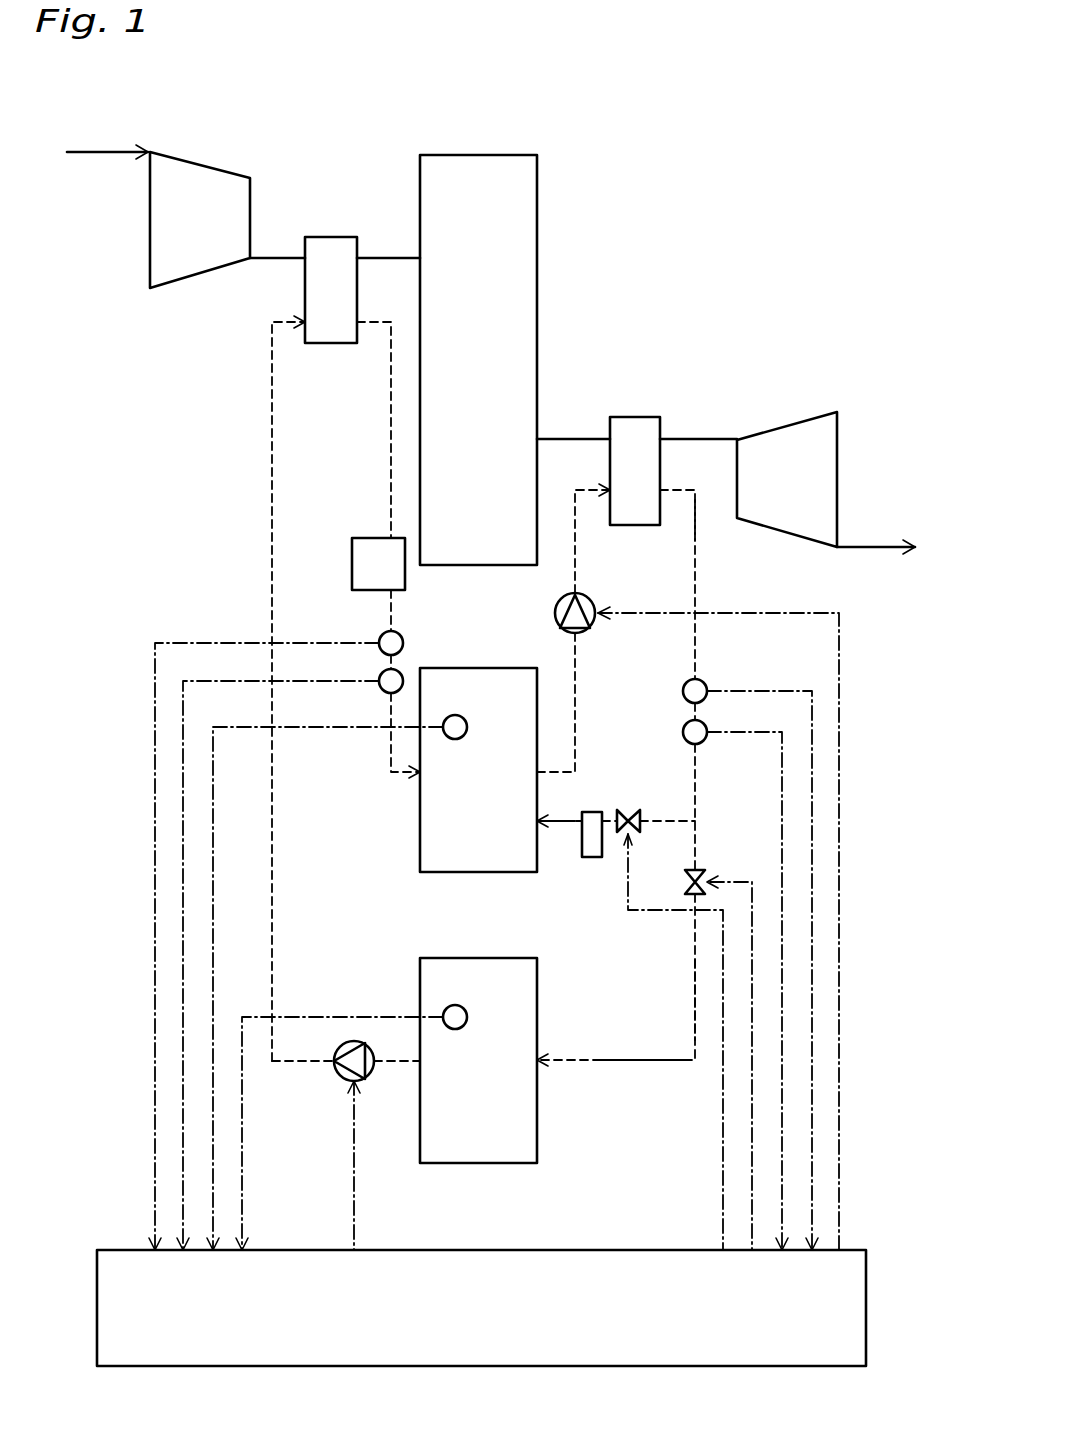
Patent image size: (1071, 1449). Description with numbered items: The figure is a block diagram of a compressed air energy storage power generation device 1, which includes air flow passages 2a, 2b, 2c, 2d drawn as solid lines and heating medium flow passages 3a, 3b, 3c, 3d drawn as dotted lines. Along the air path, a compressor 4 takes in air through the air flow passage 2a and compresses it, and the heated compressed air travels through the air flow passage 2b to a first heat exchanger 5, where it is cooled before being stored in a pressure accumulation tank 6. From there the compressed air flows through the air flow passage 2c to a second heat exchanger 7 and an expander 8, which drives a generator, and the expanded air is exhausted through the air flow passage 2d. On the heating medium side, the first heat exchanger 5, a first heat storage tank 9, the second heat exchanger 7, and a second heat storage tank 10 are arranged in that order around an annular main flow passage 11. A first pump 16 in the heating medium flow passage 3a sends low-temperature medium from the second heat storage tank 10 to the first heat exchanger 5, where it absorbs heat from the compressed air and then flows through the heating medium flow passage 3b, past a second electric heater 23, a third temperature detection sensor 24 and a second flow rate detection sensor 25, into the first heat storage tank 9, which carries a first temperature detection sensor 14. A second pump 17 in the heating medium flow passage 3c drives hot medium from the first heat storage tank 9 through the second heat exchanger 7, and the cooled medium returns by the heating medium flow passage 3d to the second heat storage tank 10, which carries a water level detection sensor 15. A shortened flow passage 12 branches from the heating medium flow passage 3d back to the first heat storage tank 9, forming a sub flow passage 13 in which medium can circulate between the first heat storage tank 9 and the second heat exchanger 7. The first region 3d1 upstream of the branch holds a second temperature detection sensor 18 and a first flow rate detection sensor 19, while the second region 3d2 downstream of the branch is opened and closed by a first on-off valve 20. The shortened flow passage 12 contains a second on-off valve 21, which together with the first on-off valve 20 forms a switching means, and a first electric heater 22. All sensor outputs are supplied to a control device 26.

The compressed air energy storage power generation device 1 is at (673, 268).
The air flow passage 2a is at (97, 150).
The air flow passage 2b is at (283, 258).
The air flow passage 2c is at (575, 438).
The air flow passage 2d is at (868, 549).
The heating medium flow passage 3a is at (272, 545).
The heating medium flow passage 3b is at (391, 403).
The heating medium flow passage 3c is at (577, 668).
The heating medium flow passage 3d is at (697, 580).
The first region 3d1 is at (697, 545).
The second region 3d2 is at (695, 1000).
The compressor 4 is at (162, 250).
The first heat exchanger 5 is at (335, 250).
The pressure accumulation tank 6 is at (490, 170).
The second heat exchanger 7 is at (636, 425).
The expander 8 is at (778, 435).
The first heat storage tank 9 is at (430, 832).
The second heat storage tank 10 is at (540, 1150).
The main flow passage 11 is at (632, 1062).
The shortened flow passage 12 is at (562, 825).
The sub flow passage 13 is at (658, 810).
The first temperature detection sensor 14 is at (445, 735).
The water level detection sensor 15 is at (447, 1008).
The first pump 16 is at (340, 1075).
The second pump 17 is at (590, 597).
The second temperature detection sensor 18 is at (707, 682).
The first flow rate detection sensor 19 is at (705, 742).
The first on-off valve 20 is at (701, 870).
The second on-off valve 21 is at (620, 810).
The first electric heater 22 is at (595, 857).
The second electric heater 23 is at (352, 540).
The third temperature detection sensor 24 is at (380, 638).
The second flow rate detection sensor 25 is at (399, 675).
The control device 26 is at (97, 1250).